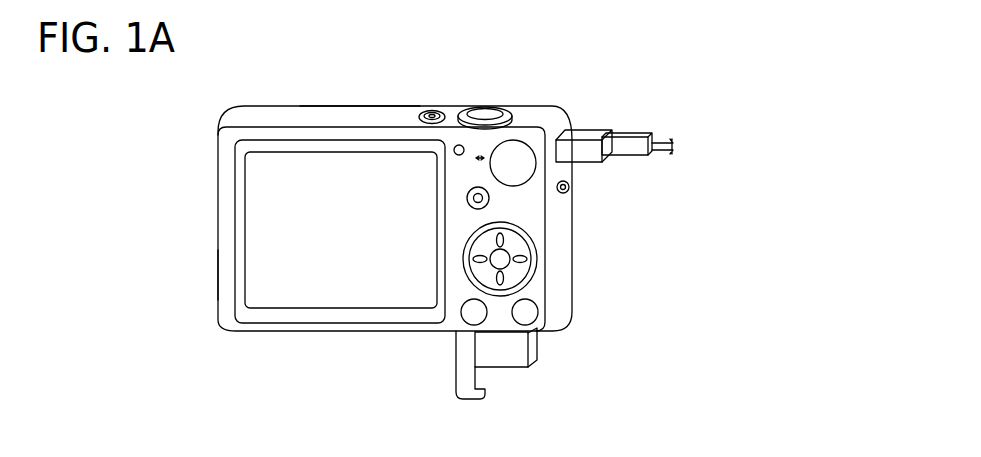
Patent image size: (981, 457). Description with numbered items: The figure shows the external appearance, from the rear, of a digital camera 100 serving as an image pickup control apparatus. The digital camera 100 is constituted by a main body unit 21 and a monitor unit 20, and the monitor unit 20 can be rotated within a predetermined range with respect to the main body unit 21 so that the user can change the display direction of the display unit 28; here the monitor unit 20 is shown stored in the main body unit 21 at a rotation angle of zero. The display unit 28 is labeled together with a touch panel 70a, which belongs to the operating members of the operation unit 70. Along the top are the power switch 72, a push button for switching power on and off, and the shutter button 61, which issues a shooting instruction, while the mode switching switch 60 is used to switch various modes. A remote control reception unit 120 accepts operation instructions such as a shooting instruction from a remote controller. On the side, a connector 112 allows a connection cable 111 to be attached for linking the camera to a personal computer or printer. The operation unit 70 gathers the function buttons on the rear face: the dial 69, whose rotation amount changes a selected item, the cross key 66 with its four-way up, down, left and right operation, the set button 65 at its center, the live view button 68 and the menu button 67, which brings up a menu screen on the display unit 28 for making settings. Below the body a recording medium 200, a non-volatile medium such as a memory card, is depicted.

The digital camera 100 is at (273, 338).
The monitor unit 20 is at (240, 290).
The main body unit 21 is at (368, 107).
The display unit 28 is at (340, 178).
The touch panel 70a is at (290, 190).
The power switch 72 is at (432, 108).
The shutter button 61 is at (488, 105).
The mode switching switch 60 is at (520, 145).
The remote control reception unit 120 is at (456, 152).
The connector 112 is at (580, 133).
The connection cable 111 is at (625, 135).
The operation unit 70 is at (512, 251).
The dial 69 is at (462, 245).
The cross key 66 is at (459, 260).
The set button 65 is at (497, 262).
The live view button 68 is at (464, 320).
The menu button 67 is at (526, 325).
The recording medium 200 is at (511, 358).